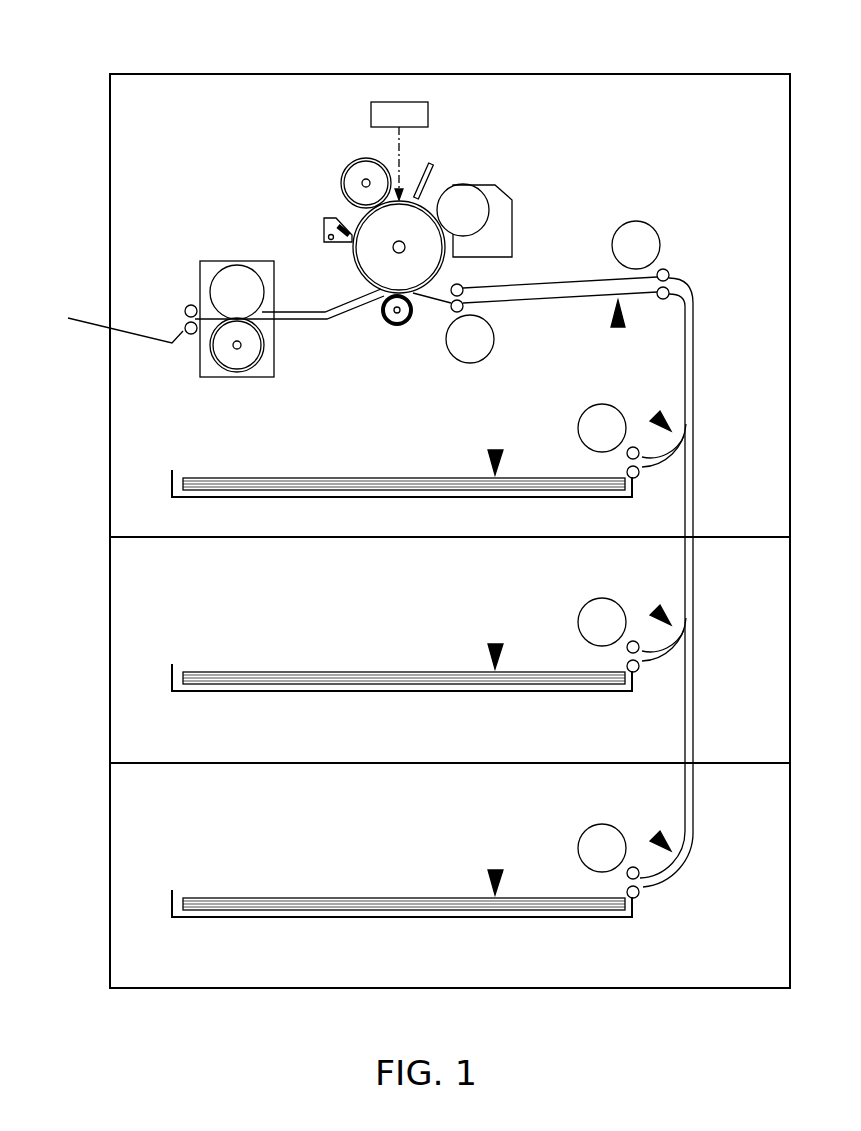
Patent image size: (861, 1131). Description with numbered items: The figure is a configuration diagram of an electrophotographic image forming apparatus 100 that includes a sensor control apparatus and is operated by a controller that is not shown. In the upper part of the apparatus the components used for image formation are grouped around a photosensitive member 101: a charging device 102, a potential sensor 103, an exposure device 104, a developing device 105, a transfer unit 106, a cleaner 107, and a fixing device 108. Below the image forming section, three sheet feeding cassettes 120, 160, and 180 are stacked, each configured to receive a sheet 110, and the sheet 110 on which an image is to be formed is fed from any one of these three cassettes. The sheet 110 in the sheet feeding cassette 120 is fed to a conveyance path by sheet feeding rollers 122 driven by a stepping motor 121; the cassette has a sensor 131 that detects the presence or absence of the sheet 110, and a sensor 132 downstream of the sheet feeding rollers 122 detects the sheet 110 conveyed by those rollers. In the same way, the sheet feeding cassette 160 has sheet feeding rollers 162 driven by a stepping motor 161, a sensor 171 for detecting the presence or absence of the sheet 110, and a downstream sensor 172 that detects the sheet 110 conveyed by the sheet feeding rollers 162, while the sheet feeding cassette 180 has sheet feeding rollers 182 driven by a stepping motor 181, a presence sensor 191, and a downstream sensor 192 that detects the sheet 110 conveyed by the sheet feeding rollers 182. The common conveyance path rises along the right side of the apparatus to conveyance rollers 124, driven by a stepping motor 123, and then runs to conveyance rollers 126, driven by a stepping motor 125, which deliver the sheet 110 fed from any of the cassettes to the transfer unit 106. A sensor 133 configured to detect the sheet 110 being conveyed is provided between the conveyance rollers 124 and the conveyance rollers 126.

The image forming apparatus 100 is at (281, 74).
The photosensitive member 101 is at (360, 275).
The charging device 102 is at (345, 172).
The potential sensor 103 is at (433, 167).
The exposure device 104 is at (371, 113).
The developing device 105 is at (512, 195).
The transfer unit 106 is at (388, 322).
The cleaner 107 is at (323, 228).
The fixing device 108 is at (225, 262).
The sheet 110 is at (300, 478).
The sheet feeding cassette 120 is at (305, 497).
The stepping motor 121 is at (580, 424).
The sheet feeding rollers 122 is at (640, 474).
The stepping motor 123 is at (640, 223).
The conveyance rollers 124 is at (670, 272).
The stepping motor 125 is at (450, 354).
The conveyance rollers 126 is at (466, 289).
The sensor 131 is at (488, 458).
The sensor 132 is at (655, 415).
The sensor 133 is at (612, 316).
The sheet feeding cassette 160 is at (305, 691).
The stepping motor 161 is at (580, 618).
The sheet feeding rollers 162 is at (640, 668).
The sensor 171 is at (488, 652).
The sensor 172 is at (655, 609).
The sheet feeding cassette 180 is at (305, 917).
The stepping motor 181 is at (580, 844).
The sheet feeding rollers 182 is at (640, 894).
The sensor 191 is at (488, 878).
The sensor 192 is at (655, 835).